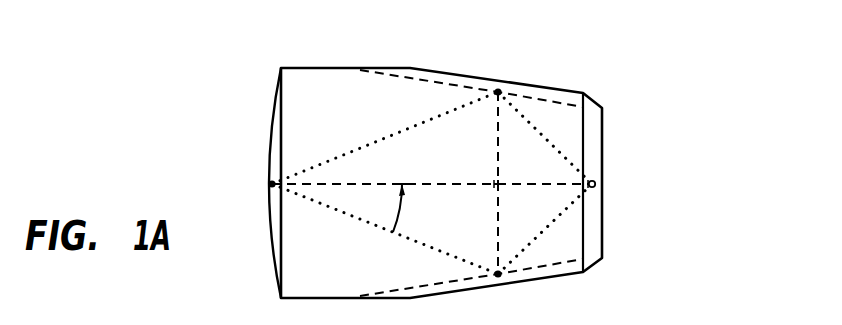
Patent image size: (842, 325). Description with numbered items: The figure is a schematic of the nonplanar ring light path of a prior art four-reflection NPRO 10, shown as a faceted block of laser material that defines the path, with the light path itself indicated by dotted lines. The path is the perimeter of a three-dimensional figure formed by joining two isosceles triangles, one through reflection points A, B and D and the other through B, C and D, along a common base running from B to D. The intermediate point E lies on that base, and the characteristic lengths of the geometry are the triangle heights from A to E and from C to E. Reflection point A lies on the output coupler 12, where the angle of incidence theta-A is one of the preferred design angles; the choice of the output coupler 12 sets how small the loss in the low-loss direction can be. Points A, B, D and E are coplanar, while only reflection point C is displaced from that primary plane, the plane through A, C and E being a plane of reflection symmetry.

The four-reflection NPRO 10 is at (626, 43).
The output coupler 12 is at (272, 251).
The reflection point A is at (259, 186).
The reflection point B is at (499, 295).
The reflection point C is at (609, 186).
The reflection point D is at (499, 69).
The intermediate point E is at (489, 168).